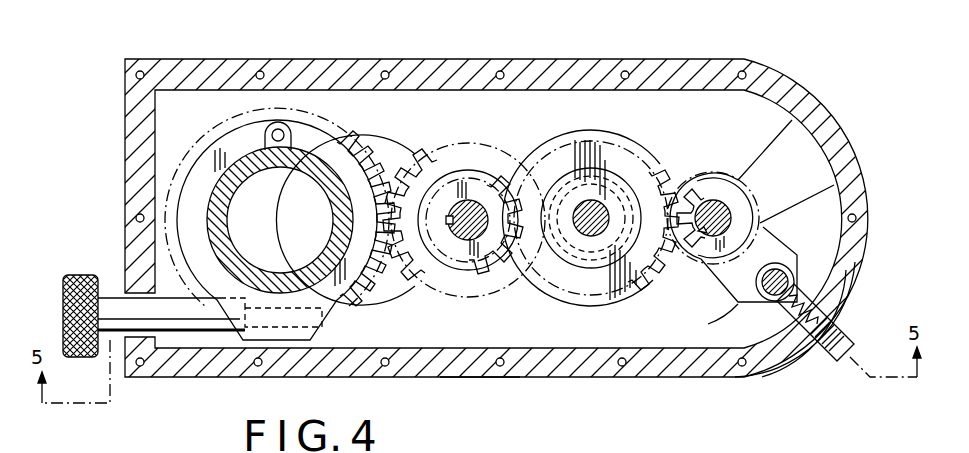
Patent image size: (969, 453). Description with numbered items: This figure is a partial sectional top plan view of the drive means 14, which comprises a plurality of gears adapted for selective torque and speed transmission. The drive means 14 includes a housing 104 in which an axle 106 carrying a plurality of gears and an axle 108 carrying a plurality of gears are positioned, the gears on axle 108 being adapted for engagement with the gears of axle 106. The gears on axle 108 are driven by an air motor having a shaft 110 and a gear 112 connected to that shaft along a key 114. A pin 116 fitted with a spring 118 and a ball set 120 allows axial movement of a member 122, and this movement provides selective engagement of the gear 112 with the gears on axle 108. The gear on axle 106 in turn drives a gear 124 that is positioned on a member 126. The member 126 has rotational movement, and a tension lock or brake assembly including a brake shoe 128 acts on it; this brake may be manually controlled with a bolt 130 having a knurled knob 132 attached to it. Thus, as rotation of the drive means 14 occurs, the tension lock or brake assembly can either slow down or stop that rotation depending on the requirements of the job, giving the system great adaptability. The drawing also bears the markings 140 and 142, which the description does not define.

The drive means 14 is at (470, 380).
The housing 104 is at (138, 103).
The axle 106 is at (468, 200).
The axle 108 is at (591, 197).
The shaft 110 is at (714, 200).
The gear 112 is at (792, 120).
The key 114 is at (695, 268).
The pin 116 is at (828, 362).
The spring 118 is at (792, 306).
The ball set 120 is at (790, 283).
The member 122 is at (790, 270).
The gear 124 is at (440, 125).
The member 126 is at (302, 147).
The brake shoe 128 is at (237, 148).
The bolt 130 is at (118, 300).
The knurled knob 132 is at (78, 284).
The arc path 140 is at (710, 323).
The bracket edge 142 is at (834, 185).